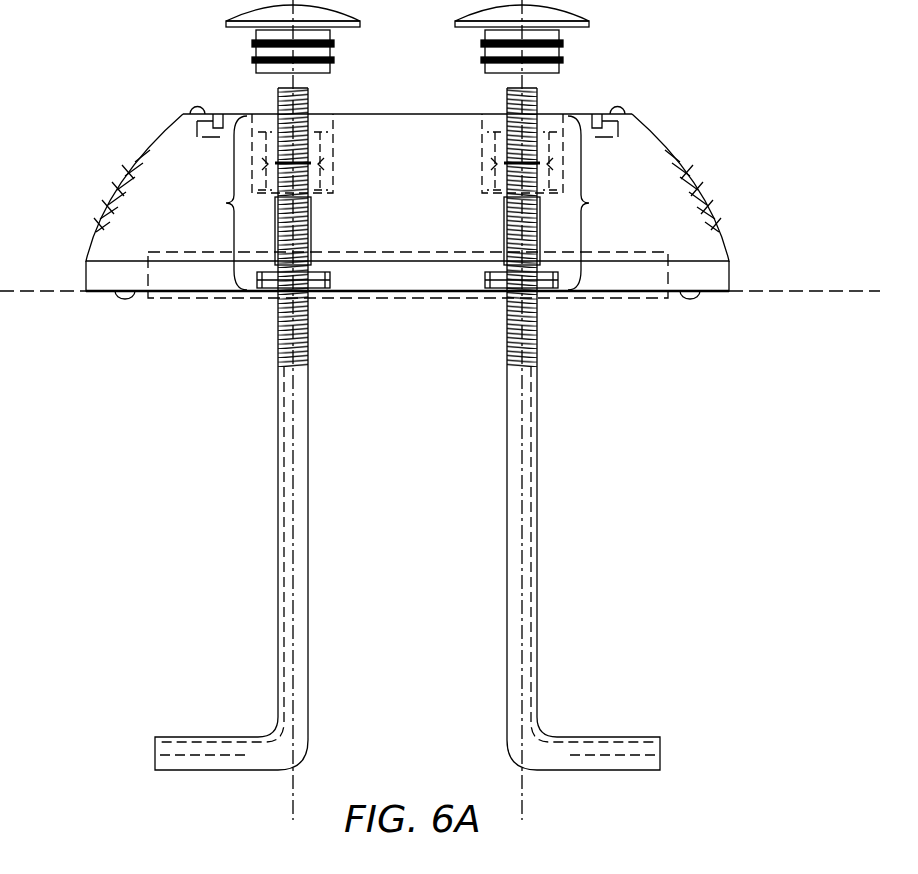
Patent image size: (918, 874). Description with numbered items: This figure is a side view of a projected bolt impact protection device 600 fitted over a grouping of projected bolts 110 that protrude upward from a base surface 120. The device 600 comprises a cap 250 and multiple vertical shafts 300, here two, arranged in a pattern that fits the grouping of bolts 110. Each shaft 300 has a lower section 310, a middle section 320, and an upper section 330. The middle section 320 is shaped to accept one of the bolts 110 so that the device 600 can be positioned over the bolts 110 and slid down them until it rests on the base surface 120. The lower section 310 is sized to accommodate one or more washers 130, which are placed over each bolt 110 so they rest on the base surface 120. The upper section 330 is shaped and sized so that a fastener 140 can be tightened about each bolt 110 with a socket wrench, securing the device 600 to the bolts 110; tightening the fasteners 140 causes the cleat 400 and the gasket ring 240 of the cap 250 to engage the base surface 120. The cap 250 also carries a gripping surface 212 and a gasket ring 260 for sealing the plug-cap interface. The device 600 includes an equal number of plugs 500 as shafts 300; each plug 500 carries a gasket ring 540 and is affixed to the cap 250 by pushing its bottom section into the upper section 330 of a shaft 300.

The bolt 110 is at (308, 500).
The base surface 120 is at (770, 290).
The washer 130 is at (276, 294).
The fastener 140 is at (320, 136).
The gripping surface 212 is at (106, 200).
The gasket ring 240 is at (118, 297).
The cap 250 is at (656, 119).
The gasket ring 260 is at (192, 110).
The vertical shaft 300 is at (410, 203).
The lower section 310 is at (331, 281).
The middle section 320 is at (312, 231).
The upper section 330 is at (336, 147).
The cleat 400 is at (634, 300).
The plug 500 is at (236, 46).
The gasket ring 540 is at (334, 60).
The projected bolt impact protection device 600 is at (108, 138).